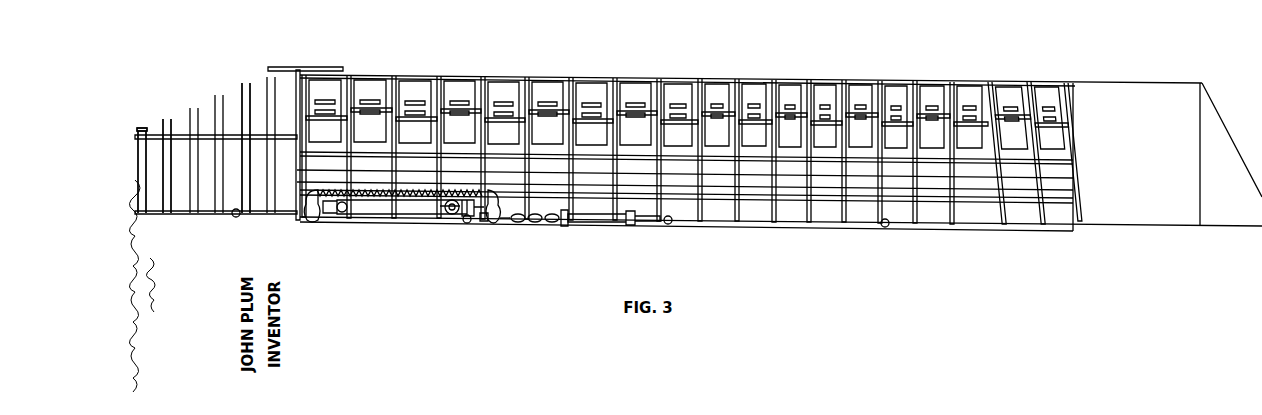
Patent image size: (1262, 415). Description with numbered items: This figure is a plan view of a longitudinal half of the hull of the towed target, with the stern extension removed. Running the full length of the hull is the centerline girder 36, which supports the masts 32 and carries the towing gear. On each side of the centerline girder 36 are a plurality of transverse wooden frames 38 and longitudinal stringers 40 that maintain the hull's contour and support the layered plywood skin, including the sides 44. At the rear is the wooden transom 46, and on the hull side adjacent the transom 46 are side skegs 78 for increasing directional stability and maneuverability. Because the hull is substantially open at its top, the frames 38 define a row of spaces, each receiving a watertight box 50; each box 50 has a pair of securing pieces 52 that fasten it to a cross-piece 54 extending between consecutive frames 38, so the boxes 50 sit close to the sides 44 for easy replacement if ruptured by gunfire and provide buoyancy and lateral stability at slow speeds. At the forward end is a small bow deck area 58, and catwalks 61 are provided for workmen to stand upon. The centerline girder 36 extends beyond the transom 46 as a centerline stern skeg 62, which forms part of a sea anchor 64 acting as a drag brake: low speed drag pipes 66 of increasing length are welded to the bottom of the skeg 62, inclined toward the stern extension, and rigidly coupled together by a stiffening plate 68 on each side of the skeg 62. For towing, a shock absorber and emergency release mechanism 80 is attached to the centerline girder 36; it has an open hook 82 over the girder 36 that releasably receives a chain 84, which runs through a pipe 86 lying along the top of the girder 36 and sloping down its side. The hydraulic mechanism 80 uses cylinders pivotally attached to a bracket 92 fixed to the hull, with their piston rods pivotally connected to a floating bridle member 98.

The masts 32 is at (890, 225).
The centerline girder 36 is at (1125, 226).
The transverse wooden frames 38 is at (348, 76).
The longitudinal stringers 40 is at (1067, 202).
The sides 44 is at (560, 75).
The wooden transom 46 is at (298, 80).
The watertight box 50 is at (447, 92).
The securing pieces 52 is at (1013, 124).
The cross-piece 54 is at (653, 120).
The bow deck area 58 is at (1147, 90).
The catwalks 61 is at (300, 180).
The centerline stern skeg 62 is at (192, 213).
The sea anchor 64 is at (195, 93).
The low speed drag pipes 66 is at (158, 213).
The stiffening plate 68 is at (146, 127).
The side skegs 78 is at (338, 68).
The shock absorber and emergency release mechanism 80 is at (418, 216).
The open hook 82 is at (498, 224).
The chain 84 is at (540, 222).
The pipe 86 is at (613, 222).
The bracket 92 is at (314, 224).
The floating bridle member 98 is at (471, 223).